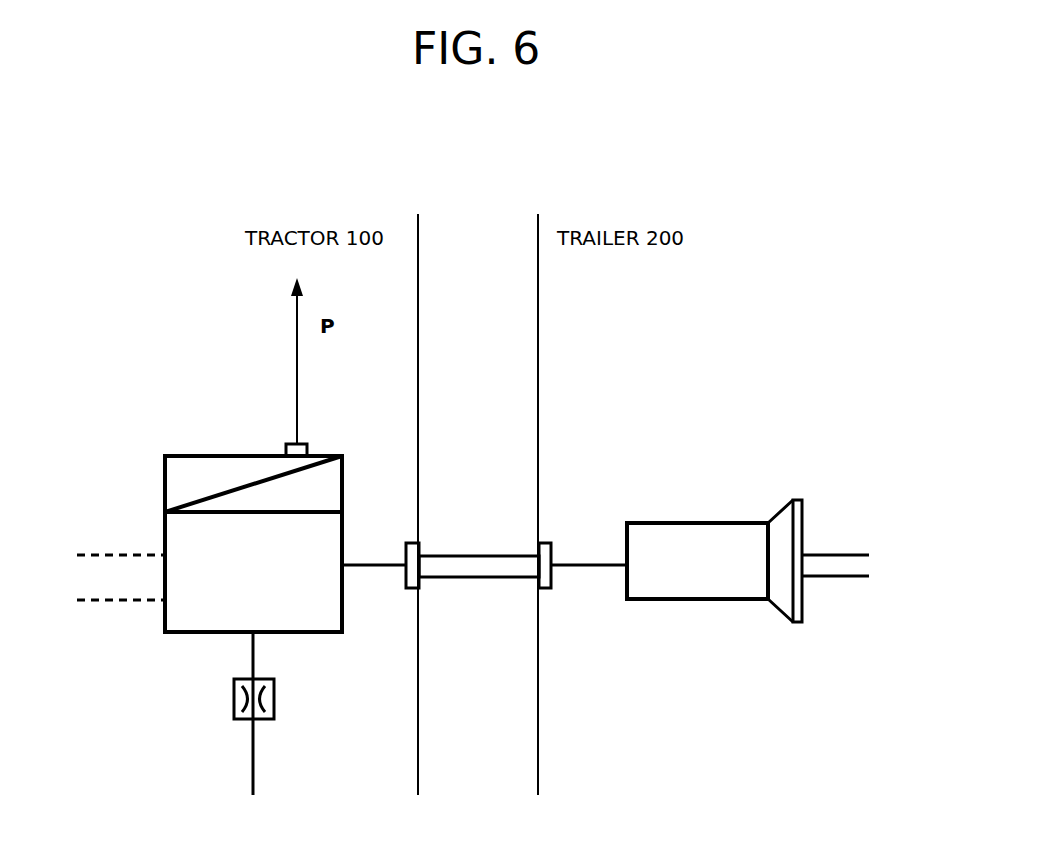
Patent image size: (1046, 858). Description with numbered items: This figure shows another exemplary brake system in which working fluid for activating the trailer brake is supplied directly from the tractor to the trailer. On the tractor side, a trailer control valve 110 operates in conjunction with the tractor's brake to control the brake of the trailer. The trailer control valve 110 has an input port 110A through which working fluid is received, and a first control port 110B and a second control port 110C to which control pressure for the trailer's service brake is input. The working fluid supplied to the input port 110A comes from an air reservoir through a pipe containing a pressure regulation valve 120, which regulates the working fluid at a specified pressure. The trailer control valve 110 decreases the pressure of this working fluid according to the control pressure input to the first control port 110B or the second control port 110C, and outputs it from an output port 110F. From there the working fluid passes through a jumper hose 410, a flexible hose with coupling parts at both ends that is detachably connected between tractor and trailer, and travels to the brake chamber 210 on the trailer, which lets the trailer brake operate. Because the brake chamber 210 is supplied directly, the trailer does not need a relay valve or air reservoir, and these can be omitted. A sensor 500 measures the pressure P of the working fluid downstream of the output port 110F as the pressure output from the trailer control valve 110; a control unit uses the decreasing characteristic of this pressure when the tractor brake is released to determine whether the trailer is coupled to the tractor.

The trailer control valve 110 is at (170, 438).
The input port 110A is at (256, 633).
The first control port 110B is at (164, 553).
The second control port 110C is at (164, 602).
The output port 110F is at (343, 557).
The pressure regulation valve 120 is at (234, 700).
The sensor 500 is at (307, 446).
The jumper hose 410 is at (475, 556).
The brake chamber 210 is at (693, 522).